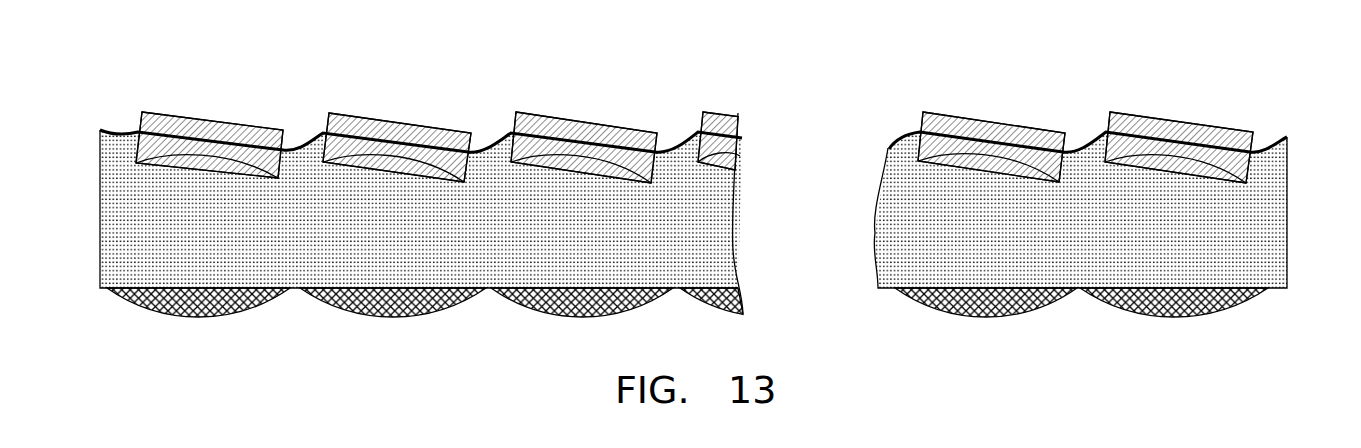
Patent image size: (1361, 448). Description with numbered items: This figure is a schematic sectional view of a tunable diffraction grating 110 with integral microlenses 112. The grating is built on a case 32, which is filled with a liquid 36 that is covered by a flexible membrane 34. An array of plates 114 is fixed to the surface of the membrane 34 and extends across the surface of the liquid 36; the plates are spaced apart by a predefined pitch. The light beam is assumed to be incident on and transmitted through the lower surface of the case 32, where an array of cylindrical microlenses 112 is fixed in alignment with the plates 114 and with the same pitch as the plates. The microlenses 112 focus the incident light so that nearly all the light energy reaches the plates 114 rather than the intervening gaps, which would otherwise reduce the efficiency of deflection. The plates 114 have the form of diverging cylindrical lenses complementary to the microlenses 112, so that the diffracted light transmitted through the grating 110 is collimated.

The case 32 is at (1287, 237).
The flexible membrane 34 is at (310, 143).
The liquid 36 is at (885, 244).
The tunable diffraction grating 110 is at (1220, 90).
The microlenses 112 is at (313, 293).
The plates 114 is at (183, 128).